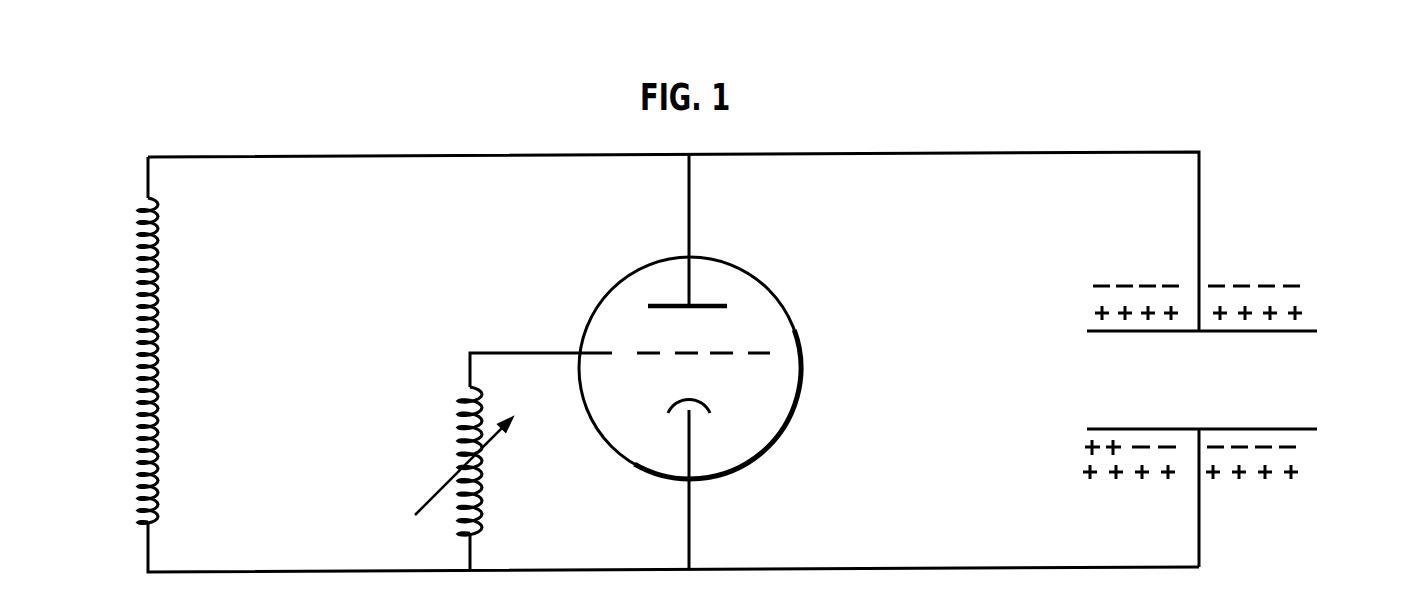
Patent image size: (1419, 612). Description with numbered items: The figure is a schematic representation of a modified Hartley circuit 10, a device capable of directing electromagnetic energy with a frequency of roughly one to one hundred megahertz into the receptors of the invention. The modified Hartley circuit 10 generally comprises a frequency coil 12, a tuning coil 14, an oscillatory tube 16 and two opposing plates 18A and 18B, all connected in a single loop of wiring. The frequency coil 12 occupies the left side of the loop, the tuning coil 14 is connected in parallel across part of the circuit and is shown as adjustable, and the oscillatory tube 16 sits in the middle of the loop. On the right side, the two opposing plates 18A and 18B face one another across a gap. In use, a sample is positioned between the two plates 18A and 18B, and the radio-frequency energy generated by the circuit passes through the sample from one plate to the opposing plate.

The modified Hartley circuit 10 is at (435, 85).
The frequency coil 12 is at (123, 323).
The tuning coil 14 is at (425, 439).
The oscillatory tube 16 is at (808, 330).
The opposing plate 18A is at (1325, 316).
The opposing plate 18B is at (1325, 438).